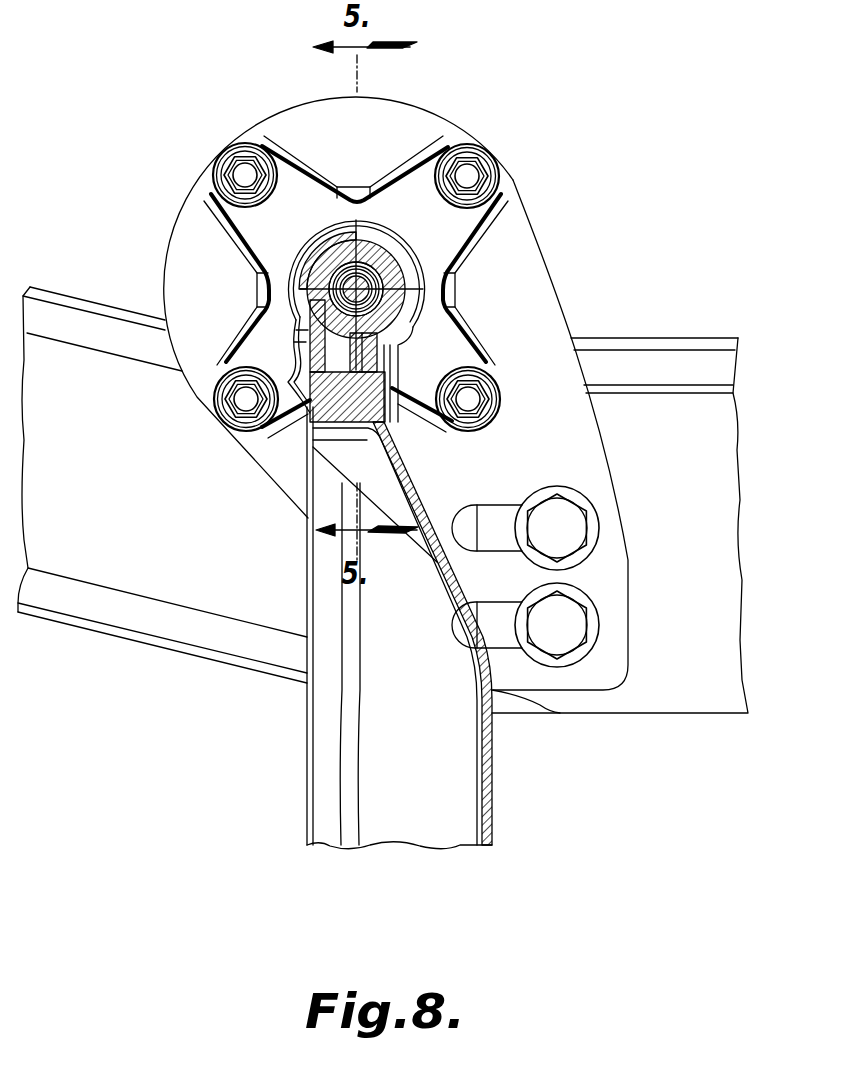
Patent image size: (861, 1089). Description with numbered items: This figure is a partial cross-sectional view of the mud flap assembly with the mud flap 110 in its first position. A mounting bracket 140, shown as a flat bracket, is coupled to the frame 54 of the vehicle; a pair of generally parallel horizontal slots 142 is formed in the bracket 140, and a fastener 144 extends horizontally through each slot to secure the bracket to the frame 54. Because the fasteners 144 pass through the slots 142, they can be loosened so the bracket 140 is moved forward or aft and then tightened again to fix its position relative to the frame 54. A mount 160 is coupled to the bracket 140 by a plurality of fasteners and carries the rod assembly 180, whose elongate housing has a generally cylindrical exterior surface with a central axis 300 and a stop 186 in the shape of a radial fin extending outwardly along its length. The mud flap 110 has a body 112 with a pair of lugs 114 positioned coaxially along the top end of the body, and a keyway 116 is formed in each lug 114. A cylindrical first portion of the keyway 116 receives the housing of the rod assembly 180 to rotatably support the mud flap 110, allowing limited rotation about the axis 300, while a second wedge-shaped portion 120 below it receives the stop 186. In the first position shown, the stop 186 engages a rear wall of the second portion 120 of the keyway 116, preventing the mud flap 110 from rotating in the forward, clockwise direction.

The frame 54 is at (660, 715).
The mud flap 110 is at (500, 755).
The body 112 is at (493, 795).
The lug 114 is at (410, 238).
The keyway 116 is at (390, 398).
The second wedge-shaped portion 120 is at (305, 380).
The mounting bracket 140 is at (292, 110).
The horizontal slots 142 is at (505, 500).
The fastener 144 is at (578, 520).
The mount 160 is at (412, 175).
The rod assembly 180 is at (298, 256).
The stop 186 is at (312, 352).
The central axis 300 is at (497, 198).